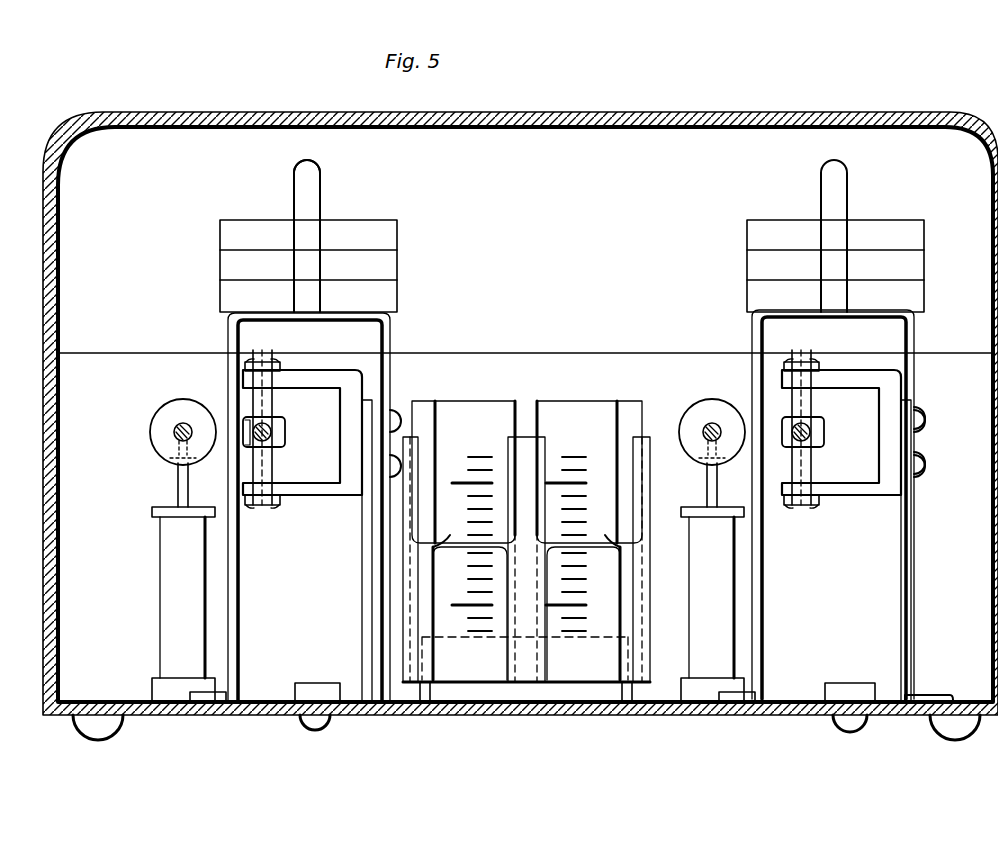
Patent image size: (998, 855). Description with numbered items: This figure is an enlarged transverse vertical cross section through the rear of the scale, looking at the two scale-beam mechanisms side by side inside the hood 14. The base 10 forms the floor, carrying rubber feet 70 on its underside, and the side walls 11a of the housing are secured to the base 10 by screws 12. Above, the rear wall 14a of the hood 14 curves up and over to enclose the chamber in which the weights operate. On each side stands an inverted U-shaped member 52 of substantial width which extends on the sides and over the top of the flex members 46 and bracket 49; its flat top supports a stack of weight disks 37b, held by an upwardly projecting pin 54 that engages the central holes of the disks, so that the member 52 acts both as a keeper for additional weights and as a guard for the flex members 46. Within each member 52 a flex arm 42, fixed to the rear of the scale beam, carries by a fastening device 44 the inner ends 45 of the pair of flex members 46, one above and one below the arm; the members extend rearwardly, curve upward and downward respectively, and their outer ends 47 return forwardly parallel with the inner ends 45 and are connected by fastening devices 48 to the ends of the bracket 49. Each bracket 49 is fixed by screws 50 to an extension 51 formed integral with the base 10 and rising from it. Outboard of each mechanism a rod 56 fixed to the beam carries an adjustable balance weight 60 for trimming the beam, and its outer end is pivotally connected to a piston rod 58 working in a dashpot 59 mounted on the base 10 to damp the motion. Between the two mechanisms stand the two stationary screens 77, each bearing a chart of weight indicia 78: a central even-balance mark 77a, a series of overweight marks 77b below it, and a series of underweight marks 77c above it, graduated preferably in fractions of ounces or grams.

The hood 14 is at (622, 108).
The rear wall of hood 14a is at (245, 117).
The side walls 11a is at (996, 536).
The inverted U-shaped member 52 is at (228, 325).
The weight disks 37b is at (220, 292).
The upwardly projecting pin 54 is at (325, 172).
The bracket 49 is at (340, 376).
The extension 51 is at (360, 593).
The flex arm 42 is at (278, 438).
The fastening device 44 is at (286, 425).
The fastening devices 48 is at (259, 362).
The outer ends of flex members 47 is at (278, 365).
The flex members 46 is at (273, 401).
The inner ends of flex members 45 is at (250, 420).
The balance weight 60 is at (178, 410).
The rod 56 is at (173, 432).
The piston rod 58 is at (178, 482).
The dashpot 59 is at (168, 598).
The screws 50 is at (926, 468).
The weight indicia 78 is at (446, 608).
The screen 77 is at (440, 402).
The even-balance mark 77a is at (650, 544).
The underweight marks 77c is at (476, 452).
The overweight marks 77b is at (585, 640).
The rubber feet 70 is at (95, 725).
The base 10 is at (128, 718).
The screws 12 is at (303, 723).